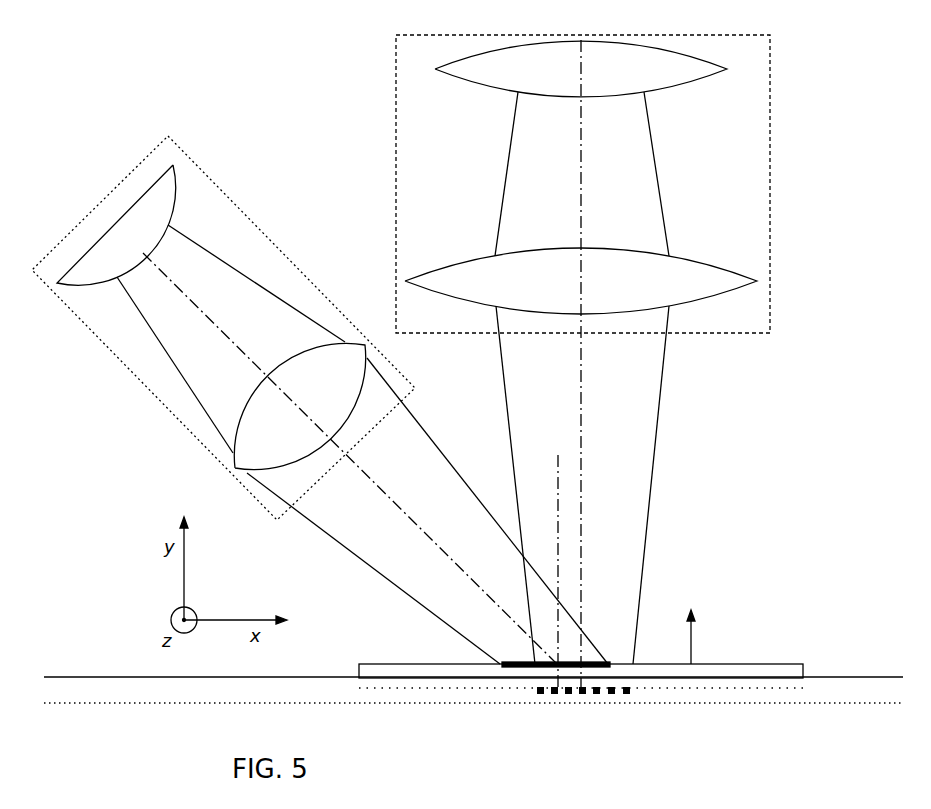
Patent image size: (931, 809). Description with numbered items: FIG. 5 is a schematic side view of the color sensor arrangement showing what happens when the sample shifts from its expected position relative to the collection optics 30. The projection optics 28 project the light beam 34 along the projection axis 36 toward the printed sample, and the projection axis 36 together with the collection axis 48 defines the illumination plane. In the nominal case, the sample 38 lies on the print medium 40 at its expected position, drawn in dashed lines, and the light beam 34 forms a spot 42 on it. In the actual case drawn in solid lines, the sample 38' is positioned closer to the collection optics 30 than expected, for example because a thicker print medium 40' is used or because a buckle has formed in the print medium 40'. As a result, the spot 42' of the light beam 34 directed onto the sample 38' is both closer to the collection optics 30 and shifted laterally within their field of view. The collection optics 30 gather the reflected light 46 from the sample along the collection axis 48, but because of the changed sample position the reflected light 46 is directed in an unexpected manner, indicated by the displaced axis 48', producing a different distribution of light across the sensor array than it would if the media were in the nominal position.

The projection optics 28 is at (137, 380).
The collection optics 30 is at (770, 117).
The light beam 34 is at (252, 277).
The projection axis 36 is at (212, 333).
The sample 38 is at (581, 712).
The sample (actual position) 38' is at (581, 645).
The print medium 40 is at (473, 726).
The print medium (thicker or buckled) 40' is at (473, 654).
The spot 42 is at (594, 712).
The spot (shifted) 42' is at (566, 642).
The reflected light 46 is at (655, 445).
The collection axis 48 is at (609, 364).
The shifted collection axis 48' is at (538, 561).